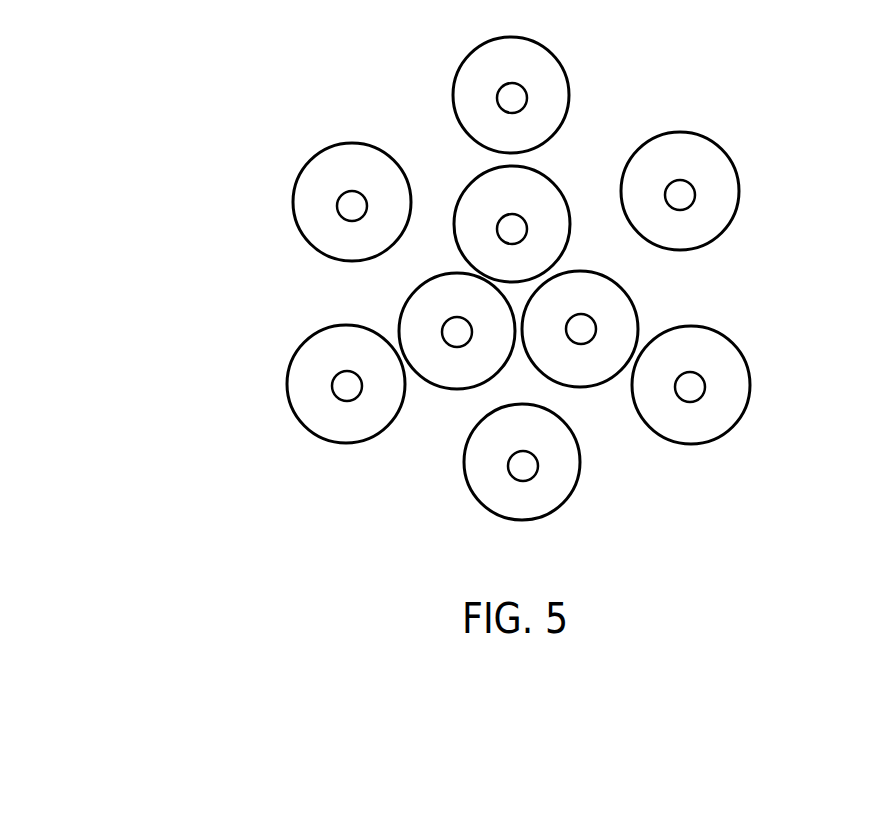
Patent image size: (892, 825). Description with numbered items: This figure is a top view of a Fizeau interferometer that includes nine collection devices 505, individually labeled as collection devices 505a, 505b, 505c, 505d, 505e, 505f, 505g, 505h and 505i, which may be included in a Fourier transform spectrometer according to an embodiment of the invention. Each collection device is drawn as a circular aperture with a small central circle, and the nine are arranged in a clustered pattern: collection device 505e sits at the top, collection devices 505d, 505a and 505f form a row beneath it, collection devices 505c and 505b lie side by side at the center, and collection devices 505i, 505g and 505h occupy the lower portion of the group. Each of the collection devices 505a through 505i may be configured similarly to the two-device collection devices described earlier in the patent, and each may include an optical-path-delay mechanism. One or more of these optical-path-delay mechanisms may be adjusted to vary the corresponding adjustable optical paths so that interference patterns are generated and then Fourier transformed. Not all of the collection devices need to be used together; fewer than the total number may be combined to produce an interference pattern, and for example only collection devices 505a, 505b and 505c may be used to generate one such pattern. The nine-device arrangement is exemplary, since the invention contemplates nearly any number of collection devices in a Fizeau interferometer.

The collection devices 505 is at (172, 345).
The collection device 505a is at (565, 177).
The collection device 505b is at (633, 298).
The collection device 505c is at (402, 302).
The collection device 505d is at (308, 155).
The collection device 505e is at (572, 73).
The collection device 505f is at (743, 198).
The collection device 505g is at (742, 422).
The collection device 505h is at (583, 487).
The collection device 505i is at (290, 425).